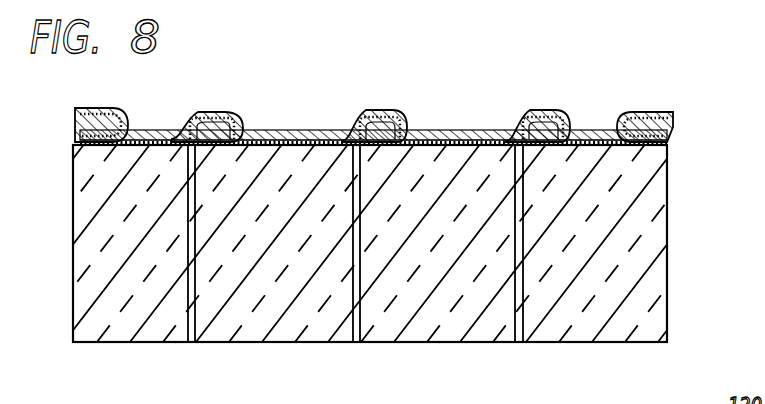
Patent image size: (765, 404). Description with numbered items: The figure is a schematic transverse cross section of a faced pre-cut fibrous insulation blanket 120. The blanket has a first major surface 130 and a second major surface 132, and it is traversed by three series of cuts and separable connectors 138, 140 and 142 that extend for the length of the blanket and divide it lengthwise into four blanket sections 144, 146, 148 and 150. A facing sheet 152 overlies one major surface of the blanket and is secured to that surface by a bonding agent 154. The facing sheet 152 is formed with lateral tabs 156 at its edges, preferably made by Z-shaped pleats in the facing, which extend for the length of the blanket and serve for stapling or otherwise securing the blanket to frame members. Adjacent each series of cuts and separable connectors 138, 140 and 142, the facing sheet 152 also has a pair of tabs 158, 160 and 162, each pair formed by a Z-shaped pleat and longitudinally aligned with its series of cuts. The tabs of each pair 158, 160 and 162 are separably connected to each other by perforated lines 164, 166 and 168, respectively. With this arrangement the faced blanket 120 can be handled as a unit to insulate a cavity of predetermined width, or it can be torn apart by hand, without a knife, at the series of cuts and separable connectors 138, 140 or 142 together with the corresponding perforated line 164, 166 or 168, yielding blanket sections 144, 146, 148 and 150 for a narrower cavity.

The faced pre-cut fibrous insulation blanket 120 is at (618, 67).
The first major surface 130 is at (442, 130).
The second major surface 132 is at (436, 343).
The series of cuts and separable connectors 138 is at (528, 343).
The series of cuts and separable connectors 140 is at (363, 343).
The series of cuts and separable connectors 142 is at (198, 343).
The blanket section 144 is at (611, 243).
The blanket section 146 is at (455, 243).
The blanket section 148 is at (297, 243).
The blanket section 150 is at (151, 243).
The facing sheet 152 is at (463, 130).
The bonding agent 154 is at (496, 132).
The lateral tabs 156 is at (100, 109).
The pair of tabs 158 is at (543, 128).
The pair of tabs 160 is at (378, 108).
The pair of tabs 162 is at (223, 110).
The perforated line 164 is at (578, 126).
The perforated line 166 is at (404, 126).
The perforated line 168 is at (262, 126).